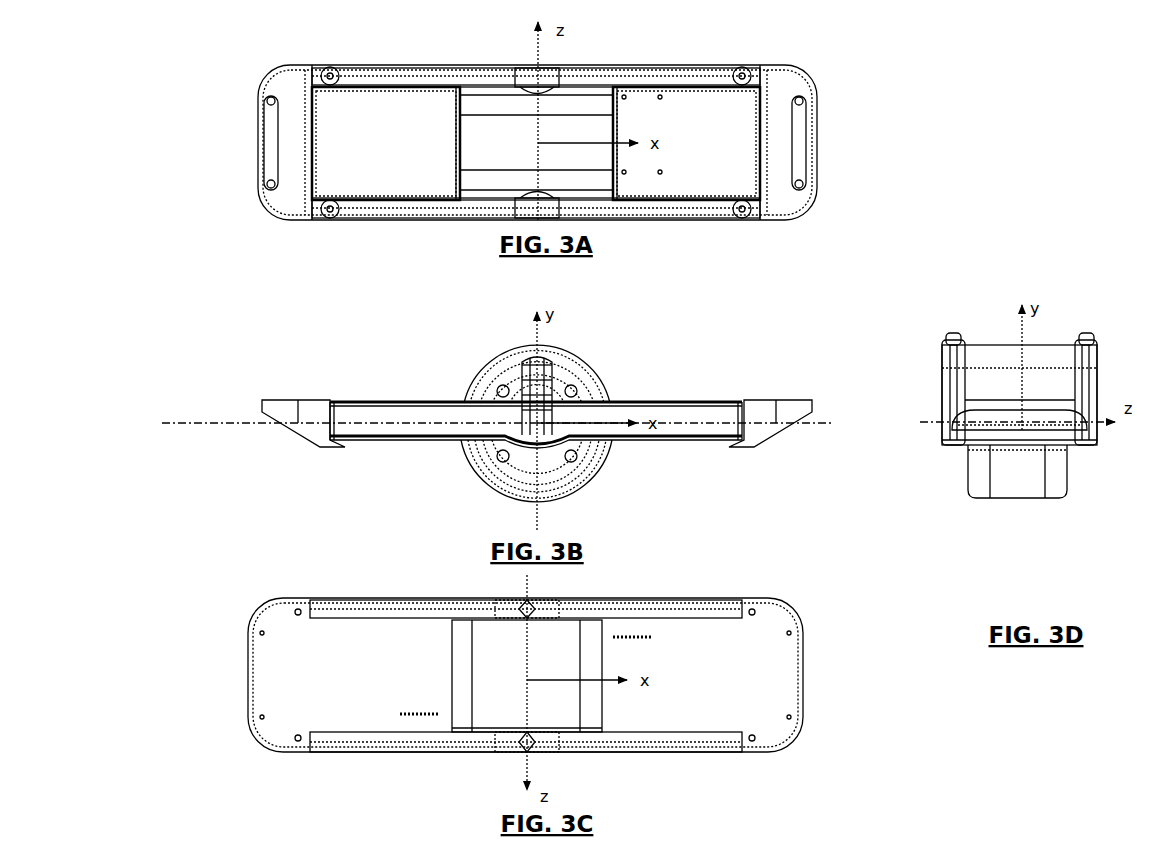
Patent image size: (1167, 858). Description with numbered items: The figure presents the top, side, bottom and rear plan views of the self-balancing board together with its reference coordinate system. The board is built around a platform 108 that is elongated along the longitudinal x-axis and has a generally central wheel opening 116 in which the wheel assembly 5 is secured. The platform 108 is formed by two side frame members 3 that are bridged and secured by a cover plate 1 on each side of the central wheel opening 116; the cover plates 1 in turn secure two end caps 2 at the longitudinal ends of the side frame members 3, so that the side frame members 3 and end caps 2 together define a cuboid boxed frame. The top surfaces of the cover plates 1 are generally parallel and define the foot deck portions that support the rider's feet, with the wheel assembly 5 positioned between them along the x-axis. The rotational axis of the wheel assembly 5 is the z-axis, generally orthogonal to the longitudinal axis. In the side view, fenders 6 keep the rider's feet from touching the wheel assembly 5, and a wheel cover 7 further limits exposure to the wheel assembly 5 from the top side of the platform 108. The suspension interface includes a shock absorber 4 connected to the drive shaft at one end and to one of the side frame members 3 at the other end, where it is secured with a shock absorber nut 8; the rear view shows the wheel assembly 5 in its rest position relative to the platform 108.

In FIG. 3C, the cover plate 1 is at (278, 668).
In FIG. 3B, the end cap 2 is at (255, 404).
In FIG. 3B, the side frame member 3 is at (360, 404).
In FIG. 3B, the shock absorber 4 is at (520, 362).
In FIG. 3B, the wheel assembly 5 is at (462, 463).
In FIG. 3D, the wheel assembly 5 is at (1005, 512).
In FIG. 3B, the fender 6 is at (616, 388).
In FIG. 3B, the wheel cover 7 is at (575, 358).
In FIG. 3B, the shock absorber nut 8 is at (519, 342).
In FIG. 3D, the shock absorber nut 8 is at (1087, 320).
In FIG. 3D, the platform 108 is at (942, 405).
In FIG. 3A, the central wheel opening 116 is at (596, 86).
In FIG. 3C, the central wheel opening 116 is at (591, 638).